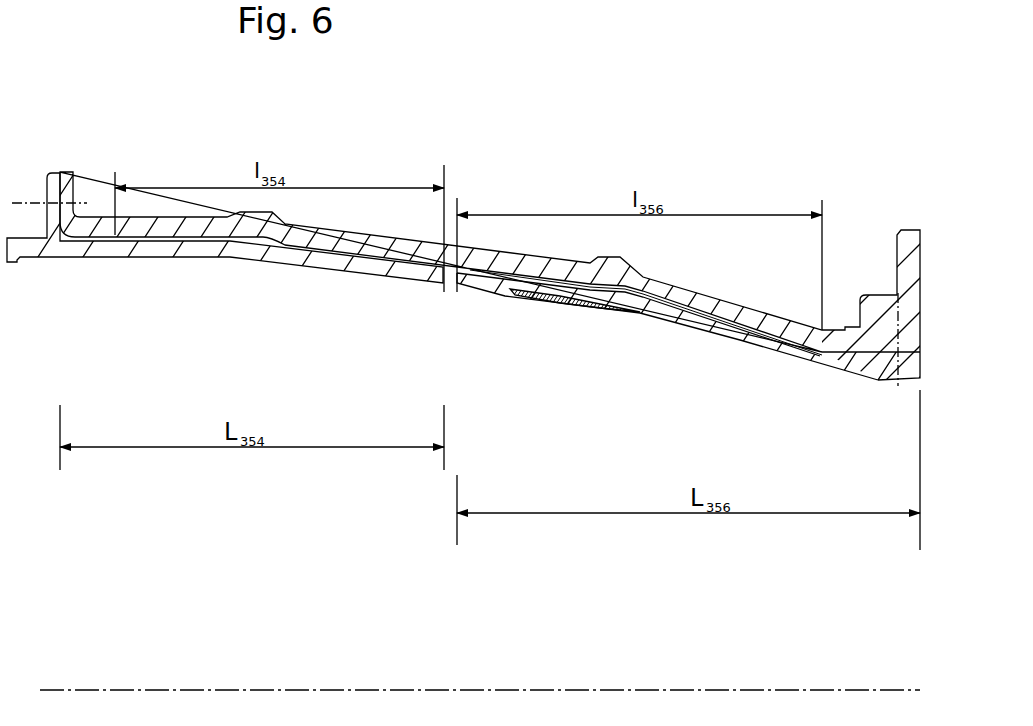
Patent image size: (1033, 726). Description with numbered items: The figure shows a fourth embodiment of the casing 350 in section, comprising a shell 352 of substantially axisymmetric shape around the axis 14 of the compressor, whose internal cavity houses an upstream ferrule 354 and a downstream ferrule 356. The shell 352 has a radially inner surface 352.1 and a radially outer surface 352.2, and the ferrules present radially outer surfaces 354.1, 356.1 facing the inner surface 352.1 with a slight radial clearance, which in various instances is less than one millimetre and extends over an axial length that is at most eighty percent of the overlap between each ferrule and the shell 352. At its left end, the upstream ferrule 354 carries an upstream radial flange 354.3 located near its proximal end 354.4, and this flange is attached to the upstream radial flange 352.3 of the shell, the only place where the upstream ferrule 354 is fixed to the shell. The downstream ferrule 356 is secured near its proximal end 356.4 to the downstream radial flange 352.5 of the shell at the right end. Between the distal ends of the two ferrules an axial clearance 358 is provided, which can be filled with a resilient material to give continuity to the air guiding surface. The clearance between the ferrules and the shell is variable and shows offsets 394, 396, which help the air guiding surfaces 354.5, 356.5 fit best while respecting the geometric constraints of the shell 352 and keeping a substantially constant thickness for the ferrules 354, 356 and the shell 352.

The axis 14 is at (390, 685).
The casing 350 is at (645, 90).
The shell 352 is at (710, 310).
The inner surface of the shell 352.1 is at (452, 265).
The outer surface of the shell 352.2 is at (288, 222).
The upstream radial flange of the shell 352.3 is at (72, 195).
The downstream radial flange of the shell 352.5 is at (898, 267).
The upstream ferrule 354 is at (79, 252).
The outer surface of the upstream ferrule 354.1 is at (157, 245).
The upstream radial flange of the upstream ferrule 354.3 is at (57, 225).
The proximal end of the upstream ferrule 354.4 is at (22, 300).
The air guiding surface of the upstream ferrule 354.5 is at (228, 260).
The downstream ferrule 356 is at (647, 315).
The outer surface of the downstream ferrule 356.1 is at (494, 270).
The proximal end of the downstream ferrule 356.4 is at (918, 393).
The air guiding surface of the downstream ferrule 356.5 is at (780, 353).
The axial clearance 358 is at (440, 289).
The offset 394 is at (266, 240).
The offset 396 is at (509, 291).